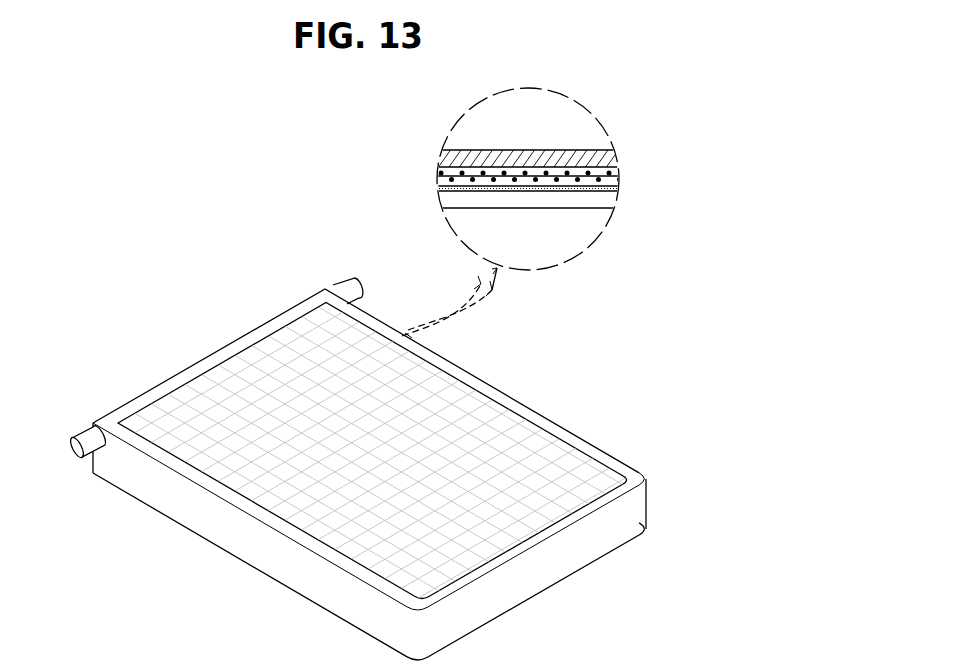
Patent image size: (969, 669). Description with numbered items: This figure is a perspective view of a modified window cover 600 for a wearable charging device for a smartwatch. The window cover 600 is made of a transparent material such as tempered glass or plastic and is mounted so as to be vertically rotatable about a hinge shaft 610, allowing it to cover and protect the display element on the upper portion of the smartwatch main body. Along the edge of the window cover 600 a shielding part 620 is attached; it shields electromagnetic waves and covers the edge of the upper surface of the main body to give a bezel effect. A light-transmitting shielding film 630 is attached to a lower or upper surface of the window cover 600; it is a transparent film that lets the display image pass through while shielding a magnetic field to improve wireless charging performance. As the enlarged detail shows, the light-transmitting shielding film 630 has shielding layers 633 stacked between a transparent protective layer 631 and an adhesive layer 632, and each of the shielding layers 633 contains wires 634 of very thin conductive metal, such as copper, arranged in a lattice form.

The window cover 600 is at (334, 453).
The hinge shaft 610 is at (360, 285).
The shielding part 620 is at (545, 575).
The light-transmitting shielding film 630 is at (547, 423).
The transparent protective layer 631 is at (613, 161).
The adhesive layer 632 is at (603, 193).
The shielding layers 633 is at (612, 187).
The wires 634 is at (613, 176).